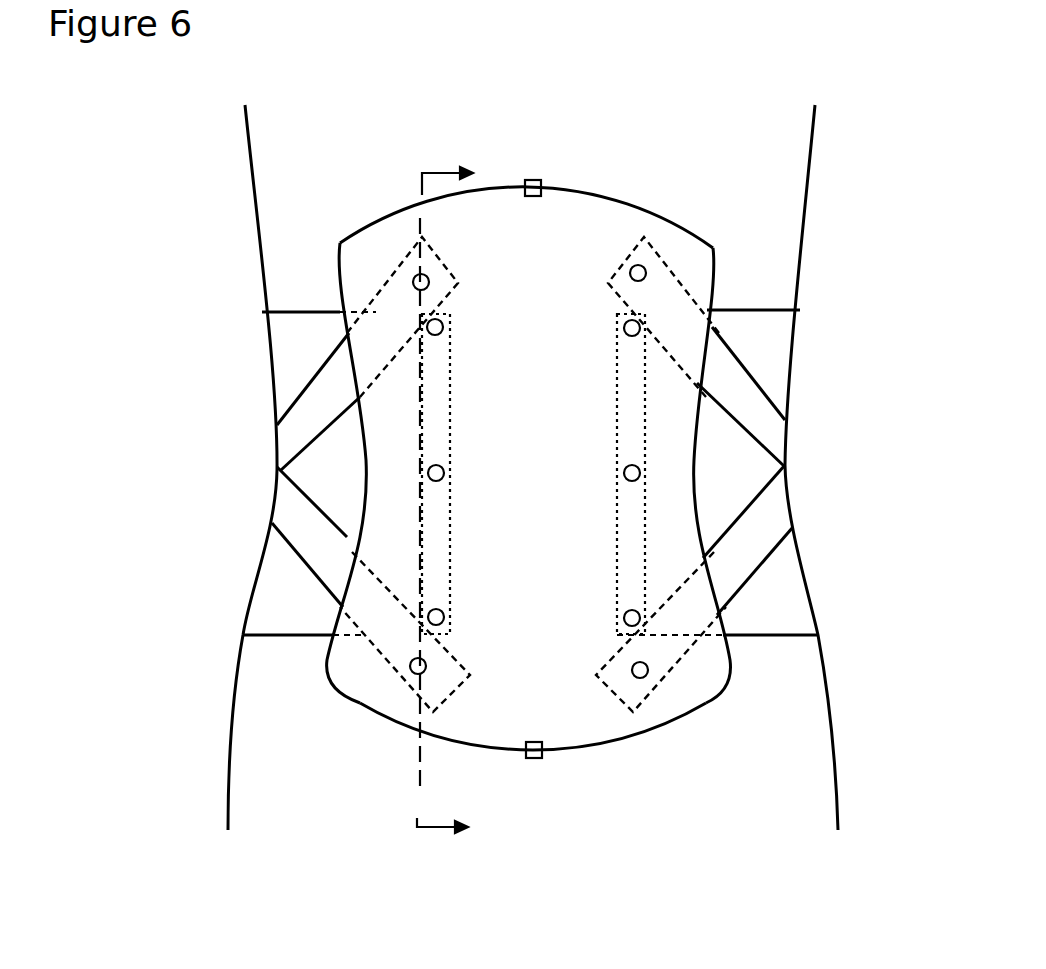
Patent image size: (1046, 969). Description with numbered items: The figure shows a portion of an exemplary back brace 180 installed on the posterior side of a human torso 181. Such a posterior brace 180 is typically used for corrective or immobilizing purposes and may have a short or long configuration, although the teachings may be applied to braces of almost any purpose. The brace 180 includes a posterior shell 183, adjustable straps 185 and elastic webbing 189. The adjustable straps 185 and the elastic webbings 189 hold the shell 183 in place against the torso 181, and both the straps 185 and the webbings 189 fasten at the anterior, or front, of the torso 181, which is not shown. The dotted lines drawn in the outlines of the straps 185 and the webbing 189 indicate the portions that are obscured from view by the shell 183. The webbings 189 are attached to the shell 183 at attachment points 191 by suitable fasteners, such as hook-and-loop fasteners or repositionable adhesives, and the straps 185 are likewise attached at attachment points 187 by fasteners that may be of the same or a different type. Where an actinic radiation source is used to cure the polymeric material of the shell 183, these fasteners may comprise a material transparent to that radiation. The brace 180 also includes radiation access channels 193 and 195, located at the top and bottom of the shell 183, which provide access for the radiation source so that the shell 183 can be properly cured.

The back brace 180 is at (529, 468).
The human torso 181 is at (298, 182).
The posterior shell 183 is at (603, 197).
The adjustable straps 185 is at (630, 253).
The attachment points 187 is at (617, 273).
The elastic webbing 189 is at (305, 342).
The attachment points 191 is at (617, 328).
The radiation access channel 193 is at (532, 178).
The radiation access channel 195 is at (534, 760).